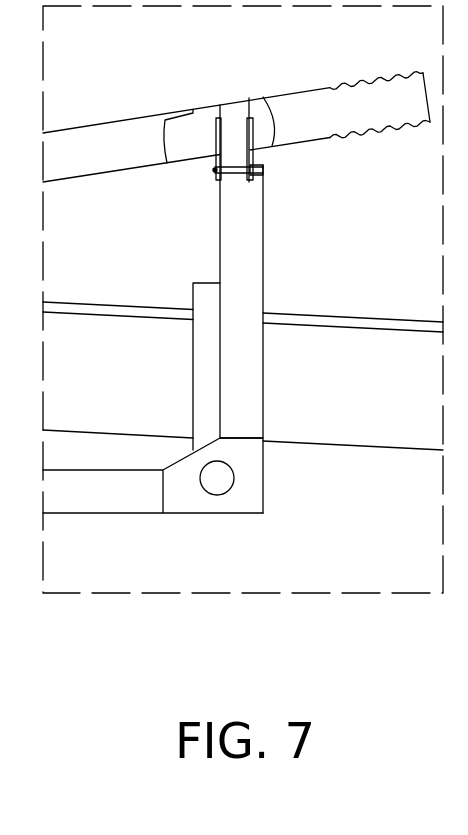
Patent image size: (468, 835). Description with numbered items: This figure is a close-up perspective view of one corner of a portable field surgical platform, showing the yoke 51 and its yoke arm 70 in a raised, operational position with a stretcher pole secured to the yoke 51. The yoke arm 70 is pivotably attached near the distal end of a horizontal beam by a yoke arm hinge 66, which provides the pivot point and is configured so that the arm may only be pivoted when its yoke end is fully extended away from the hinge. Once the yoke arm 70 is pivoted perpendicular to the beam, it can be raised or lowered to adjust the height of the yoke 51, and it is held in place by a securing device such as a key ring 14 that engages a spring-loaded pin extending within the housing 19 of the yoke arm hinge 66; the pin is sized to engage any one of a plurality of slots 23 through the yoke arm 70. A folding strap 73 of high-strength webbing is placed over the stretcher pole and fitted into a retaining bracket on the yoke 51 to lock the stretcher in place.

The strap 73 is at (243, 97).
The yoke 51 is at (264, 169).
The yoke arm 70 is at (263, 303).
The key ring 14 is at (227, 413).
The slots 23 is at (252, 390).
The housing 19 is at (260, 452).
The yoke arm hinge 66 is at (235, 462).